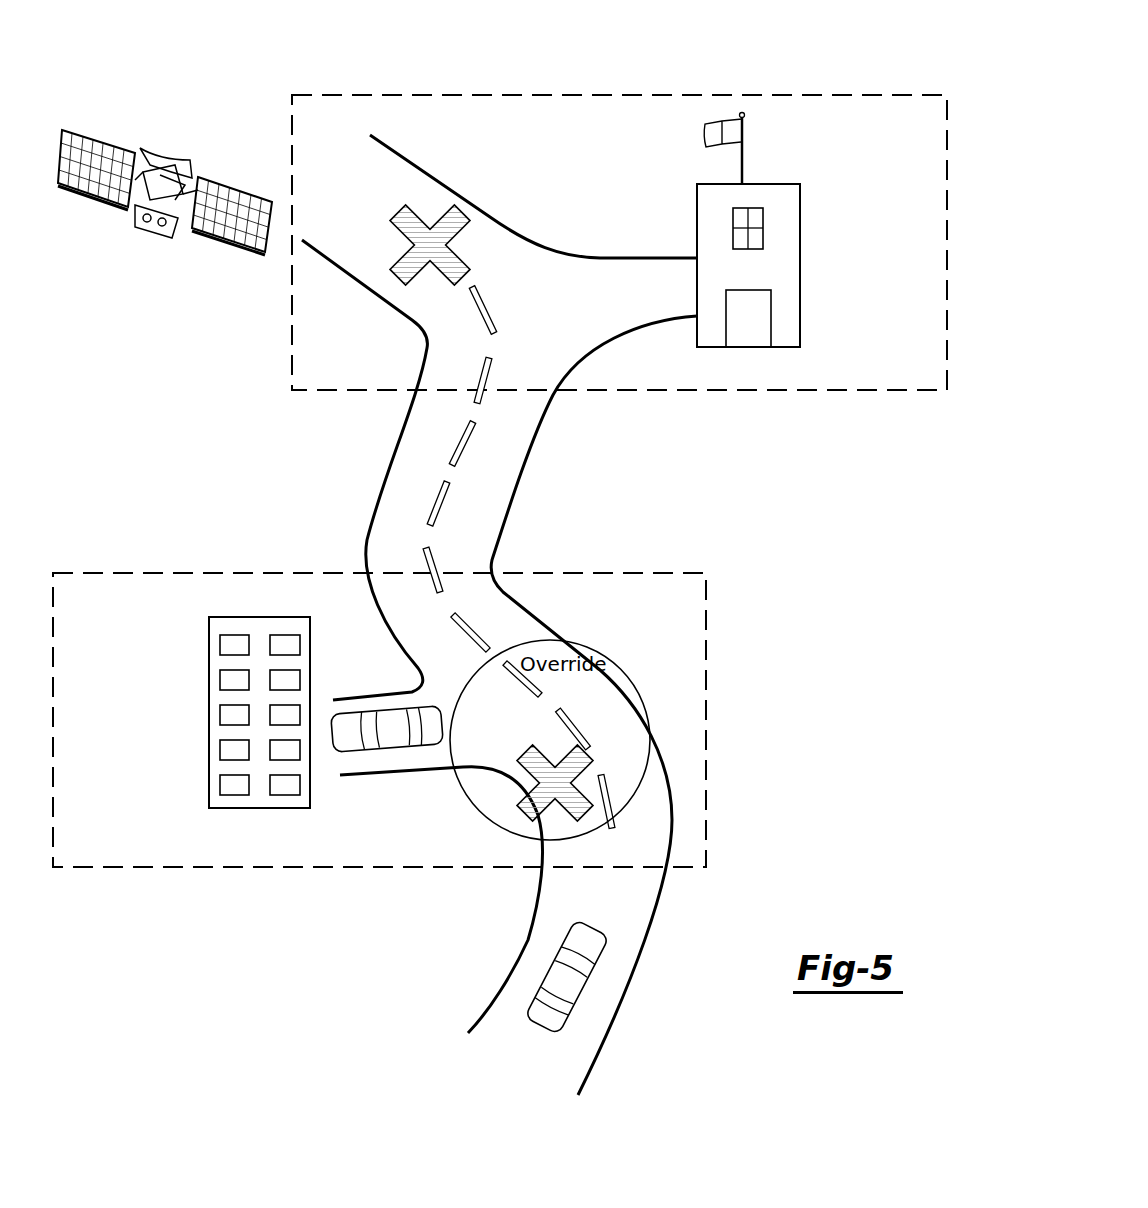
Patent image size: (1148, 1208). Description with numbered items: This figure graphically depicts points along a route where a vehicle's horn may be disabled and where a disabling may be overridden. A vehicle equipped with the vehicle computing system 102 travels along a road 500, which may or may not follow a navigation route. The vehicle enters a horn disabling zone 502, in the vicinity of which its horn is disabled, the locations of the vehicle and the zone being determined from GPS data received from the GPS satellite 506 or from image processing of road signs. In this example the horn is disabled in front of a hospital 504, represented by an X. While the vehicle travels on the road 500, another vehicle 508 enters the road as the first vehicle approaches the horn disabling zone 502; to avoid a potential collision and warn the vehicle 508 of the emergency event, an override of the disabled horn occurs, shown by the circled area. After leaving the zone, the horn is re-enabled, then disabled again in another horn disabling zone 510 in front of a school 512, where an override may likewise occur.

The vehicle computing system 102 is at (593, 925).
The road 500 is at (535, 603).
The horn disabling zone 502 is at (155, 570).
The hospital 504 is at (221, 712).
The GPS satellite 506 is at (168, 152).
The vehicle 508 is at (370, 705).
The horn disabling zone 510 is at (847, 92).
The school 512 is at (697, 204).